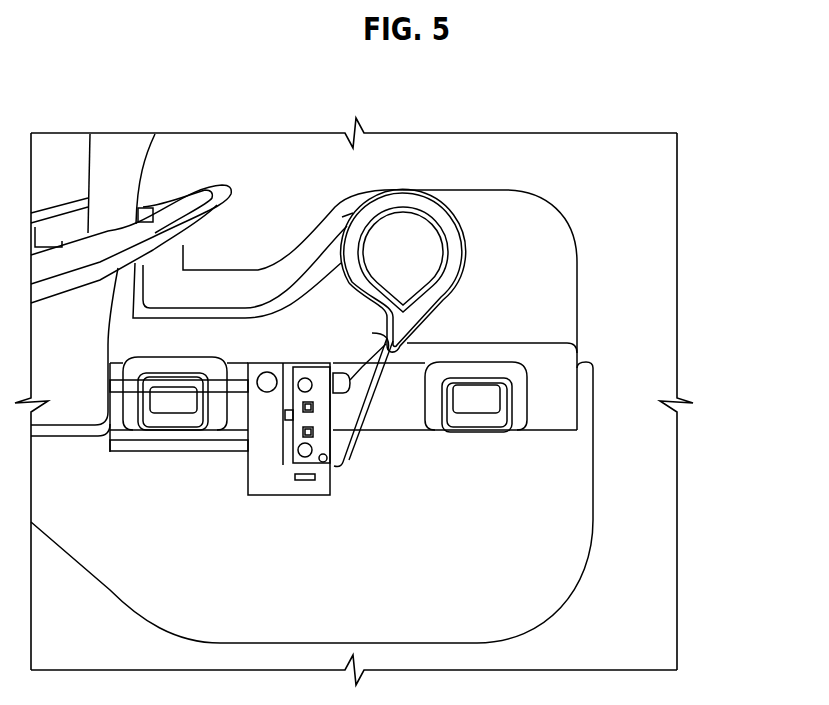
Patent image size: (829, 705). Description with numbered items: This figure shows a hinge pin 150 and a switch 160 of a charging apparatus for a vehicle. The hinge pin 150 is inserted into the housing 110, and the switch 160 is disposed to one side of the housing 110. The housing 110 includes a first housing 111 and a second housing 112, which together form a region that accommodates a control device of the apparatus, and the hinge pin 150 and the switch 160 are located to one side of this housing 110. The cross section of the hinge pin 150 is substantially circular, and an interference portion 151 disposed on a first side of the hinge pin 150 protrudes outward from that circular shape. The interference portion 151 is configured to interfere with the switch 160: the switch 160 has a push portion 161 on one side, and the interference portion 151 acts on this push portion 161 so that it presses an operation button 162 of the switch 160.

The housing 110 is at (748, 282).
The first housing 111 is at (540, 265).
The second housing 112 is at (538, 507).
The hinge pin 150 is at (406, 283).
The interference portion 151 is at (404, 352).
The switch 160 is at (327, 424).
The push portion 161 is at (350, 433).
The operation button 162 is at (351, 378).